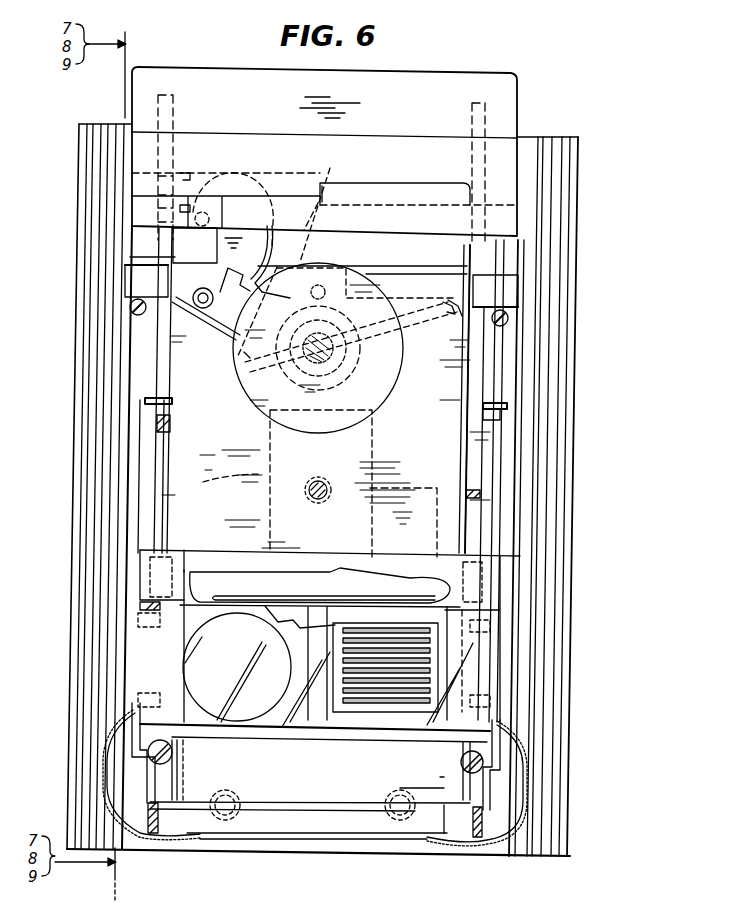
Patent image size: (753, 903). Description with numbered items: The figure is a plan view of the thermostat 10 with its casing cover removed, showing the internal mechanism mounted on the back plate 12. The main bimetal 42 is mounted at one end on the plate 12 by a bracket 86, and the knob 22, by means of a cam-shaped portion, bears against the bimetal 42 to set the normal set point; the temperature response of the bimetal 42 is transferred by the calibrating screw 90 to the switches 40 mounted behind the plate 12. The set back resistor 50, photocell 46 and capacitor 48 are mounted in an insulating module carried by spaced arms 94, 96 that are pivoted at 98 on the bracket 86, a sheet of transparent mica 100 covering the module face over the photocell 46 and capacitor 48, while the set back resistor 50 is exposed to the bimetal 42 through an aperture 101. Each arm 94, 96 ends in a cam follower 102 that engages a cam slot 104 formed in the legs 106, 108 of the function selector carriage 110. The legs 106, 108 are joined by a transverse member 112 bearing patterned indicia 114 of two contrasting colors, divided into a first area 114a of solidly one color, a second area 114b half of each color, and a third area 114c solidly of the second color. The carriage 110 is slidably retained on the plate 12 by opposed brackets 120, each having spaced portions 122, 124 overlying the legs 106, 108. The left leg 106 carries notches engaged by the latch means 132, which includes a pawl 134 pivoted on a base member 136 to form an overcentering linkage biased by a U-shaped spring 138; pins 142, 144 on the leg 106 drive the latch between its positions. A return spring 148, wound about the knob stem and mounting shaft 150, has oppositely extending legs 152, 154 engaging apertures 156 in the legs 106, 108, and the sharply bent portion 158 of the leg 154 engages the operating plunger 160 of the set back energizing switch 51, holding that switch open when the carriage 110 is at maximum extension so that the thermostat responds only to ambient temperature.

The thermostat 10 is at (540, 131).
The plate 12 is at (440, 853).
The knob 22 is at (388, 386).
The switch 40 is at (225, 489).
The main bimetal 42 is at (353, 483).
The photocell 46 is at (383, 703).
The capacitor 48 is at (237, 667).
The set back resistor 50 is at (300, 570).
The set back energizing switch 51 is at (362, 255).
The bracket 86 is at (337, 803).
The calibrating screw 90 is at (313, 481).
The arm 94 is at (137, 580).
The arm 96 is at (500, 590).
The pivot 98 is at (153, 807).
The sheet of transparent mica 100 is at (292, 720).
The aperture 101 is at (196, 553).
The cam follower 102 is at (150, 402).
The cam slot 104 is at (170, 413).
The left leg 106 is at (170, 452).
The leg 108 is at (470, 455).
The function selector carriage 110 is at (518, 205).
The transverse member 112 is at (422, 70).
The patterned indicia 114 is at (318, 192).
The first area 114a is at (415, 214).
The second area 114b is at (395, 192).
The third area 114c is at (415, 150).
The bracket 120 is at (126, 358).
The spaced portion 122 is at (137, 279).
The spaced portion 124 is at (125, 560).
The latch means 132 is at (283, 243).
The pawl 134 is at (195, 245).
The base member 136 is at (266, 267).
The U-shaped spring 138 is at (226, 178).
The pin 142 is at (186, 170).
The pin 144 is at (170, 266).
The return spring 148 is at (240, 370).
The mounting shaft 150 is at (336, 366).
The spring leg 152 is at (220, 335).
The spring leg 154 is at (396, 350).
The aperture 156 is at (132, 315).
The sharply bent portion 158 is at (356, 336).
The operating plunger 160 is at (440, 302).